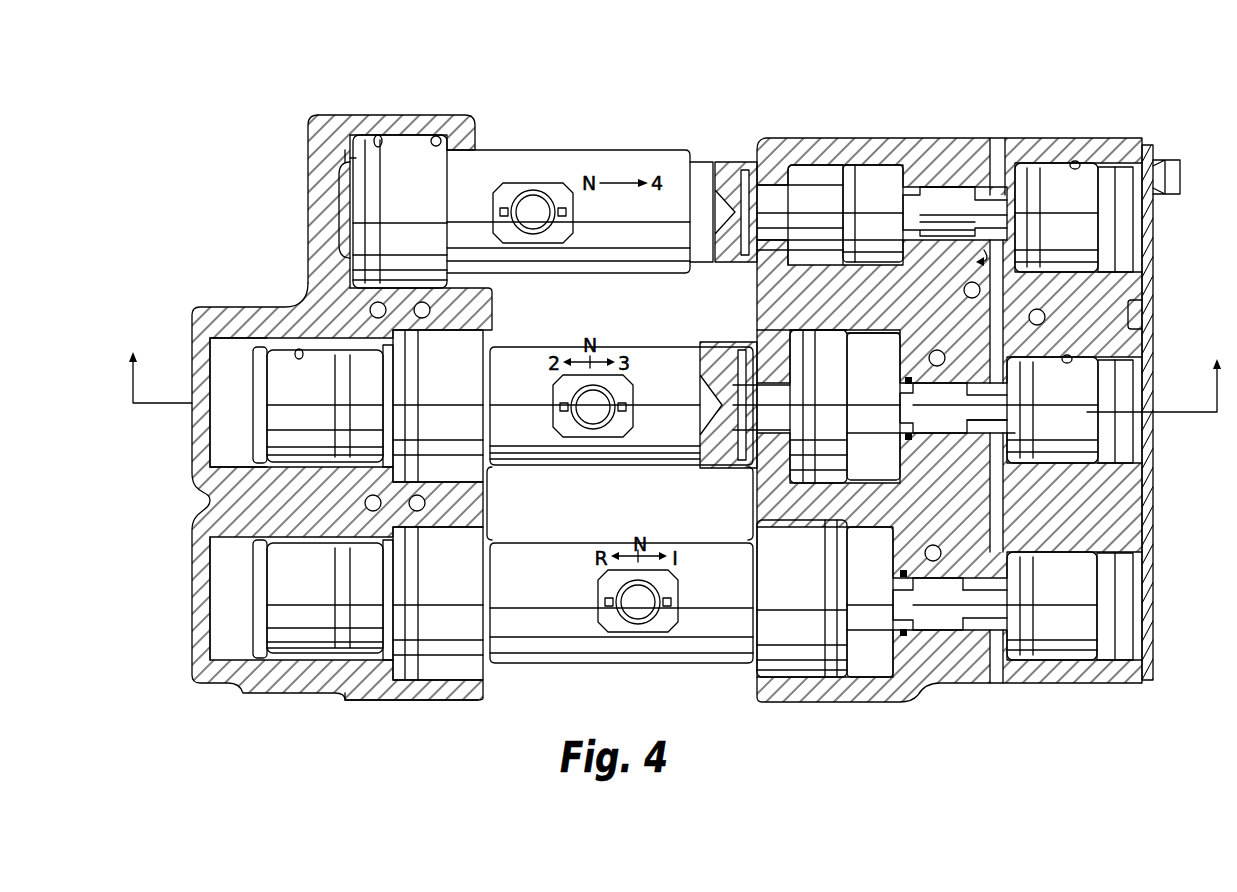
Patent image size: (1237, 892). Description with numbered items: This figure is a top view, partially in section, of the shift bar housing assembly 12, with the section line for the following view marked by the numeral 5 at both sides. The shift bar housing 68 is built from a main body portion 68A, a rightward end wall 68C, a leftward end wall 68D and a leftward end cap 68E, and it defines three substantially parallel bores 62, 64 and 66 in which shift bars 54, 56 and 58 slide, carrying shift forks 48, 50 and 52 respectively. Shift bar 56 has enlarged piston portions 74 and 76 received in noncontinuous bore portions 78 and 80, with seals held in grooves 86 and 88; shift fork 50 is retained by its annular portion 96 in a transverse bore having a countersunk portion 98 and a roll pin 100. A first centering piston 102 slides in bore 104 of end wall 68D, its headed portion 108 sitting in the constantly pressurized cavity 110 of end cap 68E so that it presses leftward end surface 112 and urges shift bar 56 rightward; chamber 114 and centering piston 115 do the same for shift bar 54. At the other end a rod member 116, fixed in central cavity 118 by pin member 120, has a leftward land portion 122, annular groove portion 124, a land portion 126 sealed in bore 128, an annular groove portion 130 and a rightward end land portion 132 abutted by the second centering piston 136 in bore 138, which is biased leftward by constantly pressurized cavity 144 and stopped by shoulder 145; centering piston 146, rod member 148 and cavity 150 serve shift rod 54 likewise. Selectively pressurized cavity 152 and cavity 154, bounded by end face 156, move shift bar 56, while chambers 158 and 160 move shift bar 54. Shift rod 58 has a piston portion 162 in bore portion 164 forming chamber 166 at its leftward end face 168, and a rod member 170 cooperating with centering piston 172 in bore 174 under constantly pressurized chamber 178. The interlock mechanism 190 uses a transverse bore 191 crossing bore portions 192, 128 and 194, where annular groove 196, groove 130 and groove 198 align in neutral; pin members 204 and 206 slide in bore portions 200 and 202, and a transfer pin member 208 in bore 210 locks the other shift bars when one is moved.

The shift bar housing assembly 12 is at (1128, 132).
The shift fork 48 is at (640, 615).
The shift fork 50 is at (597, 417).
The shift fork 52 is at (531, 207).
The shift bar 54 is at (522, 583).
The shift bar 56 is at (500, 389).
The shift bar 58 is at (453, 191).
The bore 62 is at (430, 527).
The bore 64 is at (480, 318).
The bore 66 is at (378, 140).
The shift bar housing 68 is at (915, 145).
The main body portion 68A is at (410, 122).
The rightward end wall 68C is at (1150, 241).
The leftward end wall 68D is at (317, 183).
The leftward end cap 68E is at (198, 580).
The piston portion 74 is at (440, 372).
The piston portion 76 is at (813, 343).
The bore portion 78 is at (400, 303).
The bore portion 80 is at (847, 333).
The groove 86 is at (413, 440).
The groove 88 is at (825, 475).
The annular portion 96 is at (590, 423).
The countersunk portion 98 is at (570, 428).
The roll pin 100 is at (628, 395).
The first centering piston 102 is at (280, 391).
The bore 104 is at (297, 350).
The headed portion 108 is at (258, 428).
The cavity 110 is at (208, 366).
The leftward end surface 112 is at (400, 377).
The chamber 114 is at (208, 594).
The centering piston 115 is at (276, 582).
The rod member 116 is at (863, 418).
The central cavity 118 is at (737, 340).
The pin member 120 is at (740, 370).
The leftward land portion 122 is at (862, 390).
The annular groove portion 124 is at (900, 430).
The land portion 126 is at (868, 340).
The bore 128 is at (957, 433).
The annular groove portion 130 is at (960, 395).
The rightward end land portion 132 is at (1007, 392).
The second centering piston 136 is at (1077, 397).
The bore 138 is at (1067, 362).
The cavity 144 is at (1110, 438).
The shoulder 145 is at (1017, 447).
The centering piston 146 is at (1039, 586).
The rod member 148 is at (930, 628).
The cavity 150 is at (1103, 578).
The first selectively pressurized cavity 152 is at (263, 426).
The second selectively pressurized cavity 154 is at (858, 462).
The rightwardly facing end face 156 is at (852, 367).
The selectively pressurized chamber 158 is at (367, 668).
The selectively pressurized chamber 160 is at (867, 663).
The piston portion 162 is at (388, 179).
The bore portion 164 is at (438, 138).
The selectively pressurized chamber 166 is at (346, 155).
The leftward end face 168 is at (350, 230).
The rod member 170 is at (926, 215).
The centering piston 172 is at (1049, 196).
The bore 174 is at (1076, 165).
The constantly pressurized chamber 178 is at (1113, 217).
The interlock mechanism 190 is at (1017, 228).
The transverse bore 191 is at (978, 260).
The bore portion 192 is at (942, 188).
The bore portion 194 is at (960, 604).
The annular groove 196 is at (992, 187).
The groove 198 is at (977, 667).
The bore portion 200 is at (913, 380).
The bore portion 202 is at (1003, 517).
The pin member 204 is at (983, 350).
The pin member 206 is at (990, 490).
The transfer pin member 208 is at (1000, 400).
The bore 210 is at (993, 417).
The section line 5- 5 is at (678, 369).